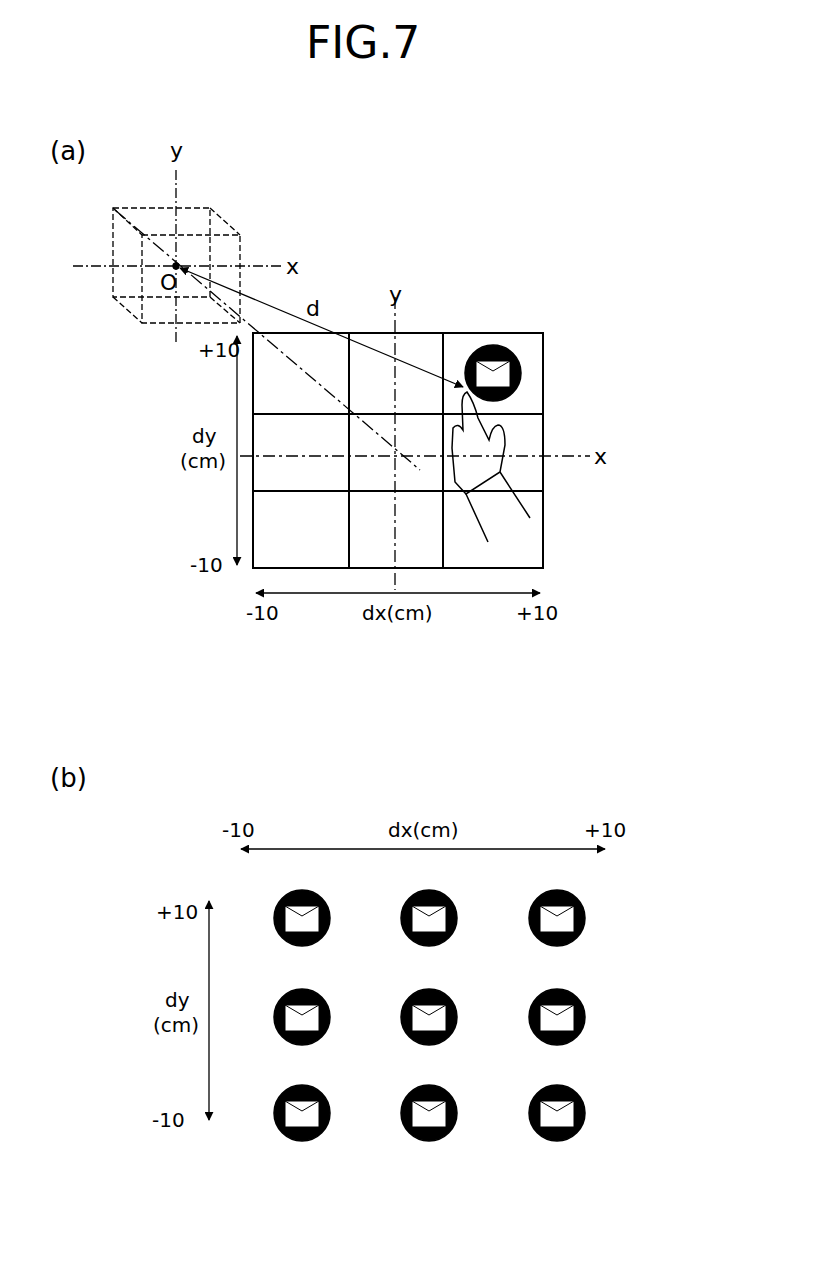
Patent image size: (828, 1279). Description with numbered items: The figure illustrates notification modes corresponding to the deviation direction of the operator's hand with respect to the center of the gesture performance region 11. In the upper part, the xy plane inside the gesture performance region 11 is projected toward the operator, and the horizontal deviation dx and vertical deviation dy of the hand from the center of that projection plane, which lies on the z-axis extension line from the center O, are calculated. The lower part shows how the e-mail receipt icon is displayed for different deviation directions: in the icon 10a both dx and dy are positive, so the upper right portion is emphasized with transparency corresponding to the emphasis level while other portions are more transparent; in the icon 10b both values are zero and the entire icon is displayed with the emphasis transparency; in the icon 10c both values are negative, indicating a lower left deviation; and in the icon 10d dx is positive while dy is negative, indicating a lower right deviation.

The gesture performance region 11 is at (216, 212).
The icon 10a is at (500, 346).
The icon 10b is at (430, 990).
The icon 10c is at (308, 1087).
The icon 10d is at (584, 1104).